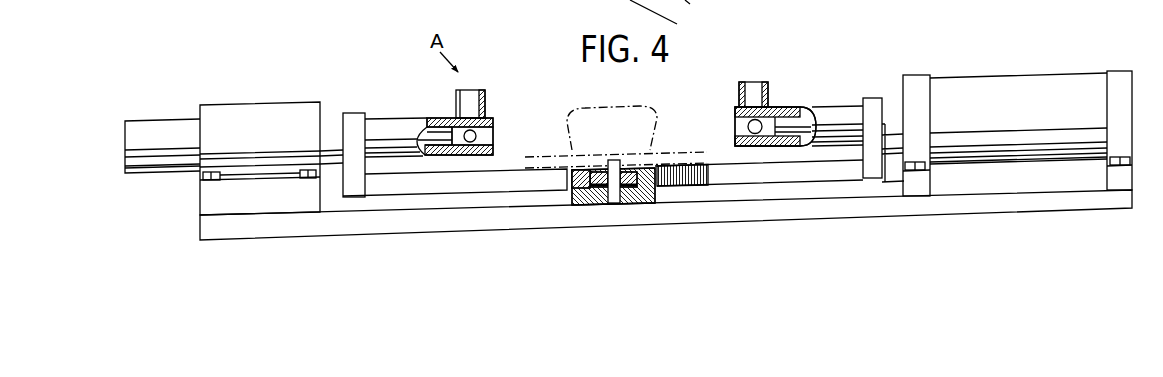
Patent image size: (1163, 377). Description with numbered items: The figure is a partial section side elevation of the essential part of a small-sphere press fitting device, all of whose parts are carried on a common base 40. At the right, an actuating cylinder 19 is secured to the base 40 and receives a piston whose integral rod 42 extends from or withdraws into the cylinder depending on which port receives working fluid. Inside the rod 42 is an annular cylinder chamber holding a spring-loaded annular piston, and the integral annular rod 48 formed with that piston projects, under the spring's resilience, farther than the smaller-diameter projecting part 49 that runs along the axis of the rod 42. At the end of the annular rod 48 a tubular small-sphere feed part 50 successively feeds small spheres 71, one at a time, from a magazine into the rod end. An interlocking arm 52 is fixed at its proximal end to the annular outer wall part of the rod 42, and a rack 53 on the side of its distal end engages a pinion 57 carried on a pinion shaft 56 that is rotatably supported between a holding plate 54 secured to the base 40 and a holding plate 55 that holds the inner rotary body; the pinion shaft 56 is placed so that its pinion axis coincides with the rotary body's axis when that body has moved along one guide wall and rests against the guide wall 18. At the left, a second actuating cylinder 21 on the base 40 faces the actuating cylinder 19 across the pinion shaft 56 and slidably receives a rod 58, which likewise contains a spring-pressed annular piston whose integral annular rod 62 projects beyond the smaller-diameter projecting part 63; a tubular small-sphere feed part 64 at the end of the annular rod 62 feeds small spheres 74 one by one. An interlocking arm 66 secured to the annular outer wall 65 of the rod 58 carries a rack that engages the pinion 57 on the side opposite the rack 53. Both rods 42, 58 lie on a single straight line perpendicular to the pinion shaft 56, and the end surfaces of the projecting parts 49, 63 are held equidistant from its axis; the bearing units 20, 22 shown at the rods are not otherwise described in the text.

The guide wall 18 is at (618, 3).
The actuating cylinder 19 is at (1000, 79).
The bearing unit 20 is at (733, 93).
The actuating cylinder 21 is at (255, 104).
The bearing unit 22 is at (489, 110).
The base 40 is at (731, 217).
The rod 42 is at (880, 98).
The annular rod 48 is at (832, 107).
The smaller-diameter projecting part 49 is at (787, 117).
The tubular small-sphere feed part 50 is at (761, 82).
The interlocking arm 52 is at (719, 172).
The rack 53 is at (685, 166).
The holding plate 54 is at (597, 205).
The holding plate 55 is at (658, 150).
The pinion shaft 56 is at (617, 160).
The pinion 57 is at (581, 177).
The rod 58 is at (158, 121).
The annular rod 62 is at (395, 123).
The smaller-diameter projecting part 63 is at (436, 128).
The tubular small-sphere feed part 64 is at (477, 93).
The annular outer wall 65 is at (341, 117).
The interlocking arm 66 is at (538, 175).
The small sphere 71 is at (746, 124).
The small sphere 74 is at (490, 137).